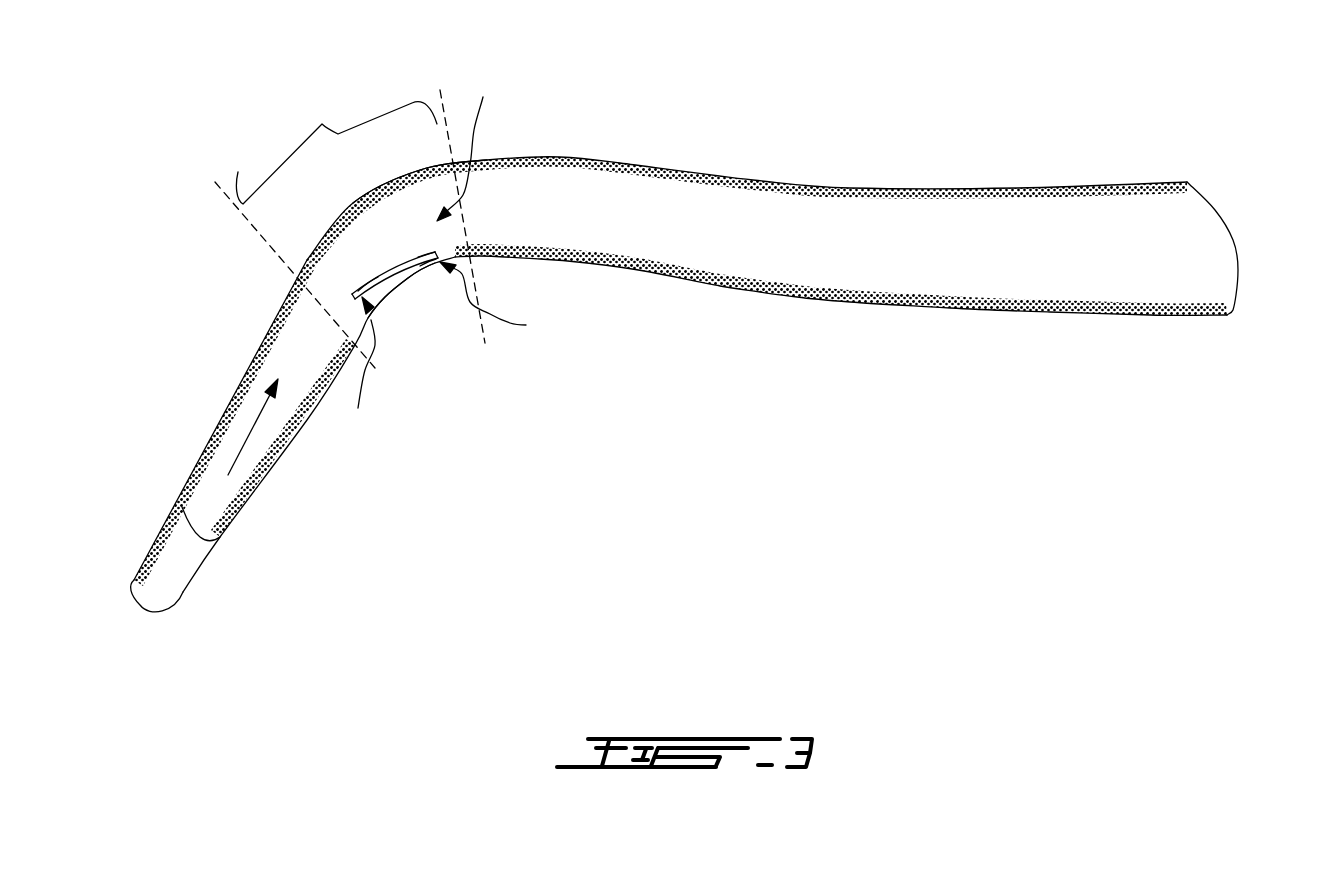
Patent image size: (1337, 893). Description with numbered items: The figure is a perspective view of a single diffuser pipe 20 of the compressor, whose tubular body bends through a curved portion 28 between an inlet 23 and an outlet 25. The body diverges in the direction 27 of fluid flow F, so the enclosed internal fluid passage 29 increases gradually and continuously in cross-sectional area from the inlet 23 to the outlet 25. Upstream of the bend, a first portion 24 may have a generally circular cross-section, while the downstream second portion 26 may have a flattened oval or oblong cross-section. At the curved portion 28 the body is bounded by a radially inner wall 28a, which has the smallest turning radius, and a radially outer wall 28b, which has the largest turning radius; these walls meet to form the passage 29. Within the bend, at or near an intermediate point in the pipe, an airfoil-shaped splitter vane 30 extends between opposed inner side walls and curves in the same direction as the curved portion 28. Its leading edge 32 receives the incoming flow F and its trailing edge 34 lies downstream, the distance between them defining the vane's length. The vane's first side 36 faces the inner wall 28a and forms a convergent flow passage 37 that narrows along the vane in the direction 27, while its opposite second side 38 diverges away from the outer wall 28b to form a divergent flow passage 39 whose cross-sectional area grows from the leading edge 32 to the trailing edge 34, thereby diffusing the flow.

The diffuser pipe 20 is at (722, 366).
The inlet 23 is at (146, 614).
The first portion 24 is at (288, 424).
The outlet 25 is at (1238, 298).
The second portion 26 is at (797, 278).
The direction of fluid flow 27 is at (255, 425).
The curved portion 28 is at (490, 415).
The radially inner wall 28a is at (390, 275).
The radially outer wall 28b is at (423, 198).
The internal fluid passage 29 is at (740, 227).
The splitter vane 30 is at (363, 373).
The leading edge 32 is at (352, 294).
The trailing edge 34 is at (435, 253).
The first side 36 is at (433, 262).
The convergent flow passage 37 is at (502, 302).
The second side 38 is at (368, 274).
The divergent flow passage 39 is at (474, 144).